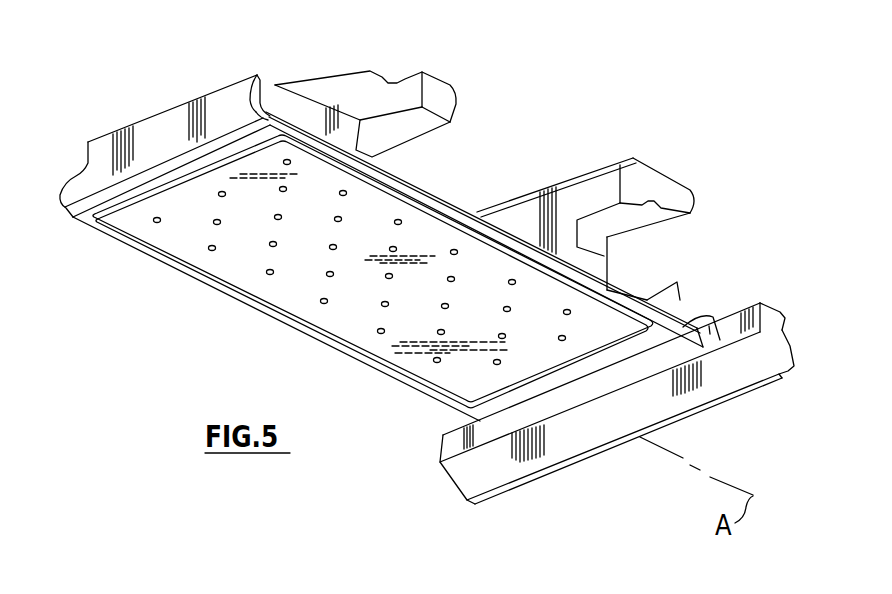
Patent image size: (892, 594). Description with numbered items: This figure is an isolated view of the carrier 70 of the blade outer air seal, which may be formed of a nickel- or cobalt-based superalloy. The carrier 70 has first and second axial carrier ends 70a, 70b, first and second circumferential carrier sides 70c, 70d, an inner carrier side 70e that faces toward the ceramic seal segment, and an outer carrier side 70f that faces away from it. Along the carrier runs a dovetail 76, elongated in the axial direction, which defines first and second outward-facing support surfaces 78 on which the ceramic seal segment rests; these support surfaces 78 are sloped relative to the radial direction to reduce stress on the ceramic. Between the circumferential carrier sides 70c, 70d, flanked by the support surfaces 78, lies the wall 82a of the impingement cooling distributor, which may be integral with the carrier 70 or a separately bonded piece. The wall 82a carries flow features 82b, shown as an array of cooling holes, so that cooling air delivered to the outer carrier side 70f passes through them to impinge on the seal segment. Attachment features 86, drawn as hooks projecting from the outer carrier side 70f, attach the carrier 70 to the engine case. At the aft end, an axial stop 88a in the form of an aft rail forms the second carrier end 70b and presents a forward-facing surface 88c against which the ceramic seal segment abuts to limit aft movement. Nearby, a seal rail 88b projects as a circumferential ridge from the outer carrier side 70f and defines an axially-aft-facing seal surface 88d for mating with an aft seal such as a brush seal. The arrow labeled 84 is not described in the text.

The carrier 70 is at (402, 227).
The first axial carrier end 70a is at (167, 141).
The second axial carrier end 70b is at (618, 403).
The first circumferential carrier side 70c is at (484, 226).
The second circumferential carrier side 70d is at (276, 319).
The inner carrier side 70e is at (716, 300).
The outer carrier side 70f is at (586, 219).
The dovetail 76 is at (224, 78).
The support surfaces 78 is at (333, 122).
The wall 82a is at (372, 285).
The flow features 82b is at (362, 267).
The perforated region 84 is at (330, 263).
The attachment features 86 is at (384, 85).
The axial stop 88a is at (785, 284).
The seal rail 88b is at (642, 271).
The forward-facing surface 88c is at (797, 327).
The axially-aft-facing seal surface 88d is at (698, 261).